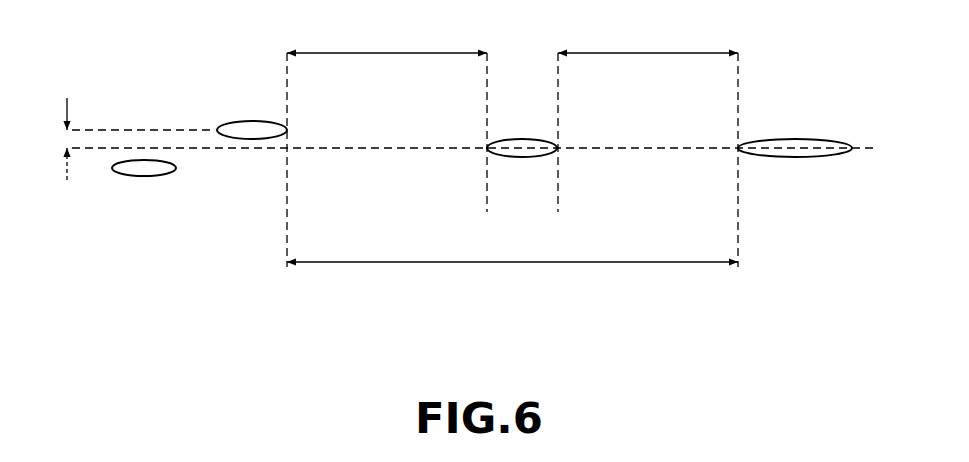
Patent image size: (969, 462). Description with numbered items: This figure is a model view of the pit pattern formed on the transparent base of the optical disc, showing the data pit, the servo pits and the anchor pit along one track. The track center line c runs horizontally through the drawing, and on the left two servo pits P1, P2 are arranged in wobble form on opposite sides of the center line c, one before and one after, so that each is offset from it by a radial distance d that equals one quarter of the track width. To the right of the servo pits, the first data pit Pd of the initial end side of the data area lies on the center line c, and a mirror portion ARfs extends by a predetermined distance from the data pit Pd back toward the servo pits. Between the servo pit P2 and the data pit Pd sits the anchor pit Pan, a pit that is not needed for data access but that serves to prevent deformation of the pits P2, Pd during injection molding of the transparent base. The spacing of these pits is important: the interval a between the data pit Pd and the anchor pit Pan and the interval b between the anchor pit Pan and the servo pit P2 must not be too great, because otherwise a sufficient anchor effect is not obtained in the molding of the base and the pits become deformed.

The servo pit P1 is at (143, 177).
The servo pit P2 is at (240, 121).
The anchor pit Pan is at (522, 138).
The data pit Pd is at (803, 138).
The center line c is at (680, 148).
The distance d is at (55, 139).
The interval a is at (648, 40).
The interval b is at (387, 40).
The mirror portion ARfs is at (512, 251).